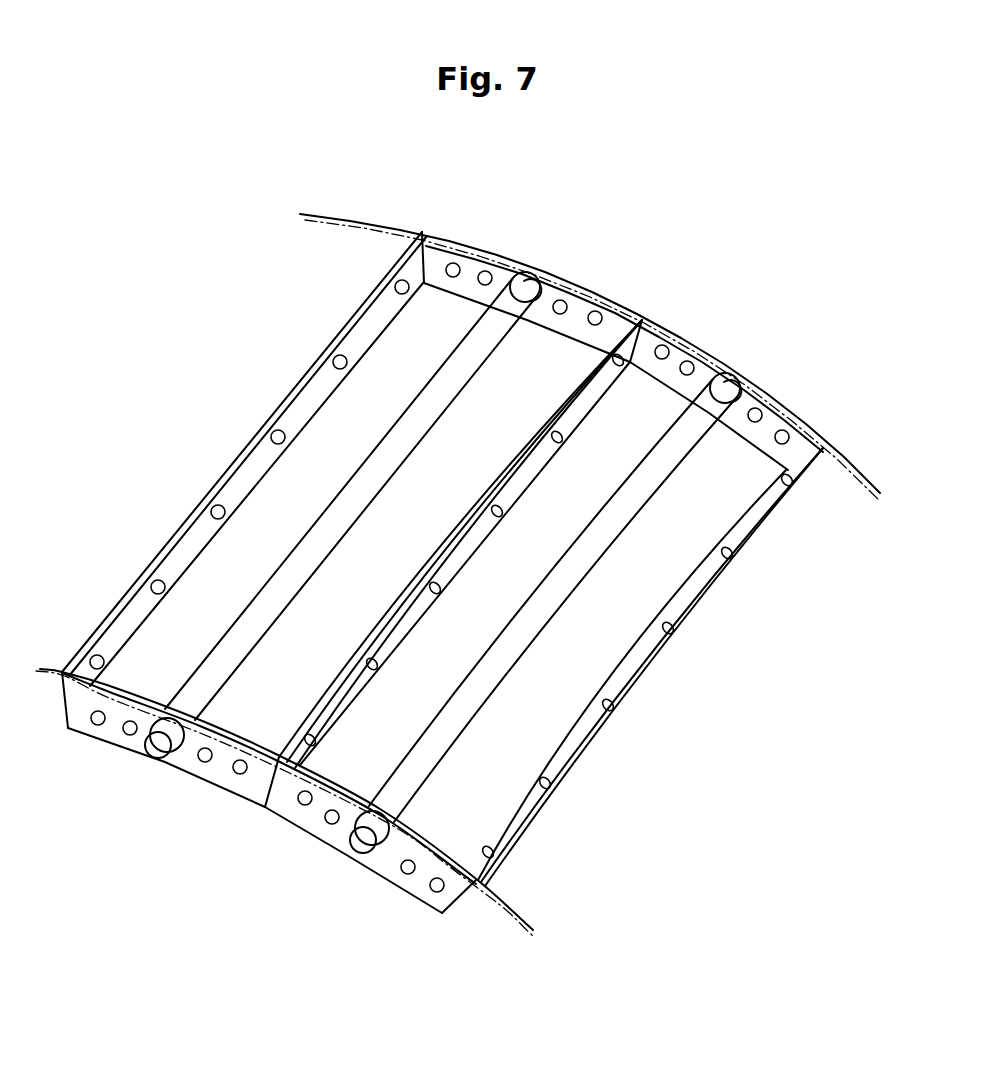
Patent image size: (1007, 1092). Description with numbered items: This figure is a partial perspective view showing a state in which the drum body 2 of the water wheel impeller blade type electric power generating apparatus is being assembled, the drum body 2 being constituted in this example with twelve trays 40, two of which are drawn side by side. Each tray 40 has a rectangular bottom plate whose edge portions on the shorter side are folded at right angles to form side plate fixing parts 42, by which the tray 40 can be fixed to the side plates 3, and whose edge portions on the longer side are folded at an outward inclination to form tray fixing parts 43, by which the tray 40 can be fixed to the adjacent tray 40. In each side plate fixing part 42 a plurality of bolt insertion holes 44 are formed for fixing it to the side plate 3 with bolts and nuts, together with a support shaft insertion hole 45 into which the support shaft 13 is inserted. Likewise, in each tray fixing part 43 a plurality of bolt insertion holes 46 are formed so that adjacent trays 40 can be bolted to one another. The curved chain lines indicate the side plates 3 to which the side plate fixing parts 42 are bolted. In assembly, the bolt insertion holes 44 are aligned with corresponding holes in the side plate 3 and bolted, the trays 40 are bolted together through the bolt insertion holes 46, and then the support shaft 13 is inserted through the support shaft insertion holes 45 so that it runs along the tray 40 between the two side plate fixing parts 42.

The drum body 2 is at (730, 297).
The side plate 3 is at (840, 448).
The support shaft 13 is at (375, 462).
The tray 40 is at (296, 341).
The side plate fixing part 42 is at (585, 302).
The tray fixing part 43 is at (243, 472).
The bolt insertion hole 44 is at (458, 265).
The support shaft insertion hole 45 is at (540, 278).
The bolt insertion hole 46 is at (339, 355).